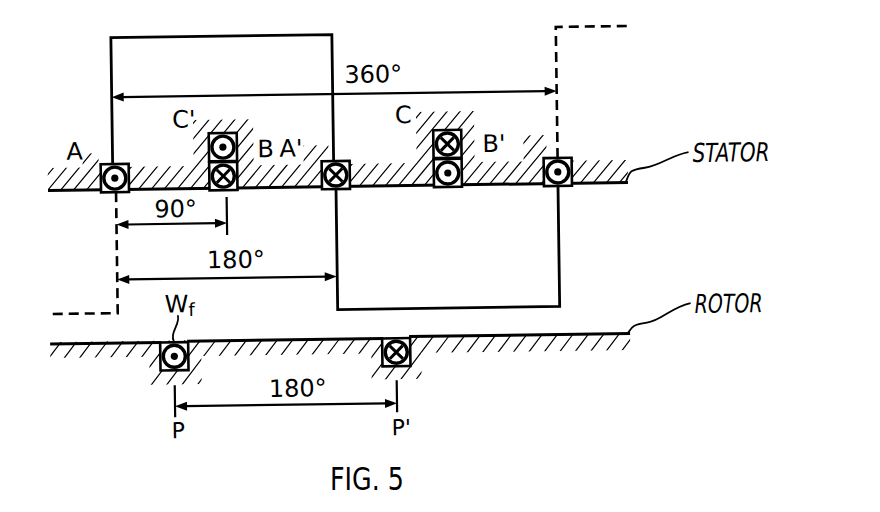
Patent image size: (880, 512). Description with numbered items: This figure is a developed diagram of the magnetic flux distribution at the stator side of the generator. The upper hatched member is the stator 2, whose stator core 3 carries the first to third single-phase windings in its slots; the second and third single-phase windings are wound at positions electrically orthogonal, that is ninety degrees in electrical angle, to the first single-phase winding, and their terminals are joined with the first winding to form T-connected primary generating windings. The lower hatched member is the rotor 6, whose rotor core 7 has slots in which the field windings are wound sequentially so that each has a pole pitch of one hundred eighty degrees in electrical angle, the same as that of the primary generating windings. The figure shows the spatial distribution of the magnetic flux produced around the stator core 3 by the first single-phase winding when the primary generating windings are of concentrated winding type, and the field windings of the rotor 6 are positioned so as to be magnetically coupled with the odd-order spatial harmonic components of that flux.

The stator 2 is at (605, 188).
The stator core 3 is at (288, 191).
The rotor 6 is at (607, 338).
The rotor core 7 is at (295, 337).